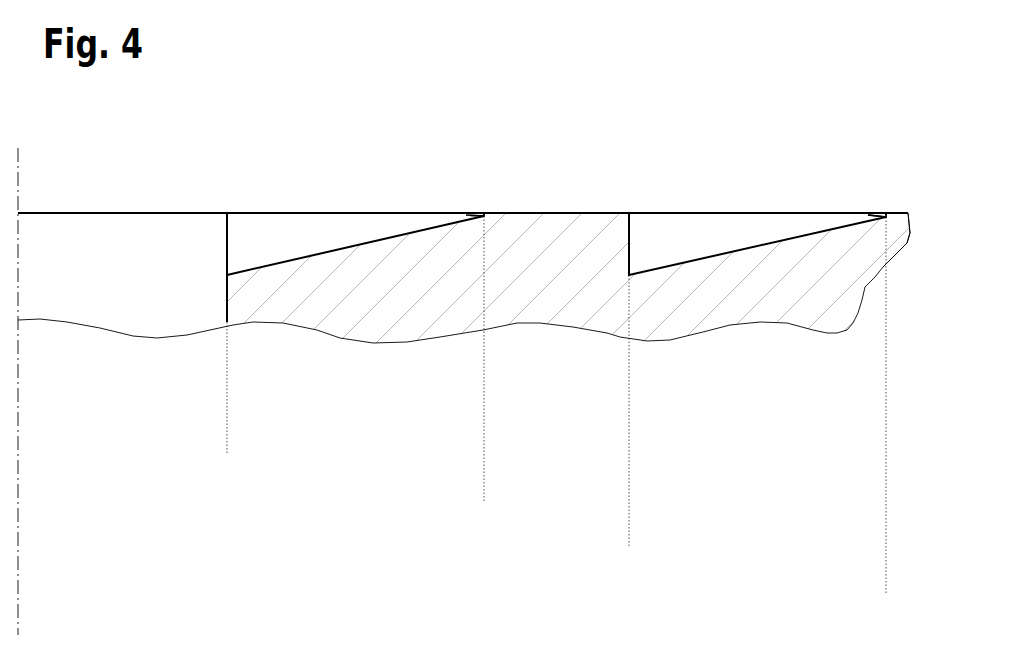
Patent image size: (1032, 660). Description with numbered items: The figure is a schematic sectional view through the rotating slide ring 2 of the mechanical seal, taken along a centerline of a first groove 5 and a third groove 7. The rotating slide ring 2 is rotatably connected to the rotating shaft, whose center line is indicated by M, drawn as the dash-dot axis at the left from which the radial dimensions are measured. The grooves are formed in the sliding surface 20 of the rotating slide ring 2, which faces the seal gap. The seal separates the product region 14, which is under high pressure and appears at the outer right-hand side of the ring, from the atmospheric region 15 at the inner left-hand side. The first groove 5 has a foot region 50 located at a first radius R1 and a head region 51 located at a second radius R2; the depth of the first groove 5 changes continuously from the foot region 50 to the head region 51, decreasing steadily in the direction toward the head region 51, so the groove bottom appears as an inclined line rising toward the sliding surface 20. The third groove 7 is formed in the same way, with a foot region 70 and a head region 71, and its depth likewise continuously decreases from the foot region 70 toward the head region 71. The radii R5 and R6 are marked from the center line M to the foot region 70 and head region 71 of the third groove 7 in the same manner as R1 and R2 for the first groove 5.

The rotating slide ring 2 is at (551, 230).
The sliding surface 20 is at (591, 213).
The first groove 5 is at (340, 228).
The foot region 50 is at (227, 275).
The head region 51 is at (483, 215).
The third groove 7 is at (742, 225).
The foot region 70 is at (647, 249).
The head region 71 is at (886, 216).
The product region 14 is at (935, 197).
The atmospheric region 15 is at (108, 271).
The center line M is at (18, 619).
The first radius R1 is at (227, 445).
The second radius R2 is at (18, 491).
The radius of inner edge of second recess R5 is at (18, 537).
The radius of outer edge of second recess R6 is at (18, 583).